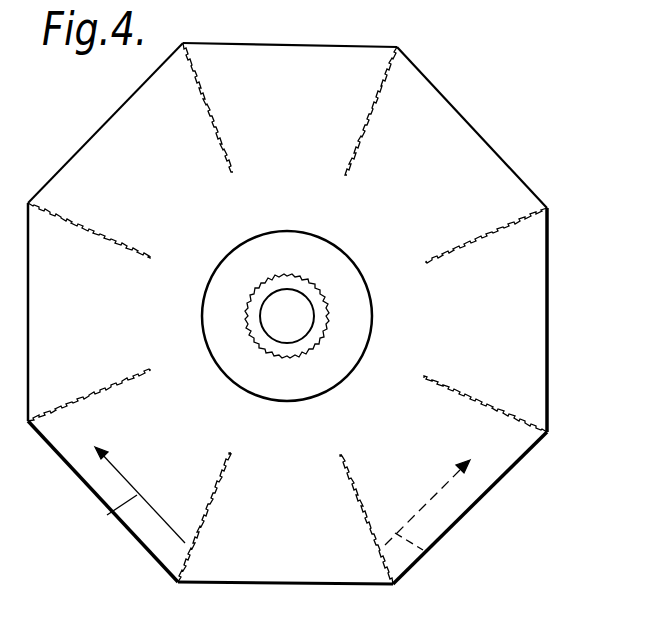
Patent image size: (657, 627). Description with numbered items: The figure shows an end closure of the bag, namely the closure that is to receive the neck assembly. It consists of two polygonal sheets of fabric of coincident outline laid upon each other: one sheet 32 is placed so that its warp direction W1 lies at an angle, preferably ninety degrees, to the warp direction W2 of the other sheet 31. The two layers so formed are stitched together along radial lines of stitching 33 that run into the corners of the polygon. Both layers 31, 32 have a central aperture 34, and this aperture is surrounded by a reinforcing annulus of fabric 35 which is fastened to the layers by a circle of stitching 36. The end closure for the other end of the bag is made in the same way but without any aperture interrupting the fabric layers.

The sheet 31 is at (457, 495).
The sheet 32 is at (155, 548).
The radial lines of stitching 33 is at (503, 413).
The central aperture 34 is at (305, 327).
The reinforcing annulus of fabric 35 is at (360, 326).
The circle of stitching 36 is at (306, 281).
The warp direction W1 is at (110, 517).
The warp direction W2 is at (430, 552).